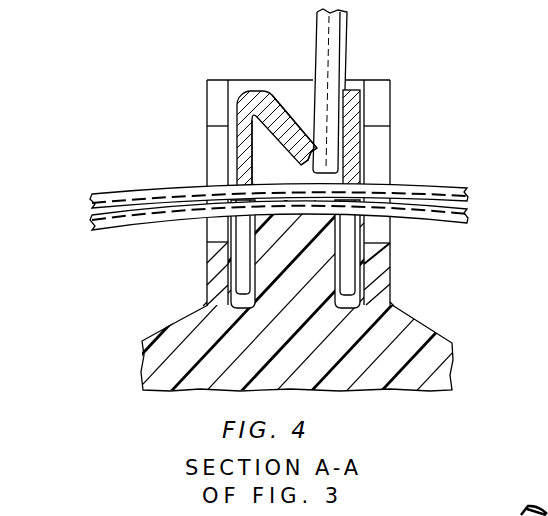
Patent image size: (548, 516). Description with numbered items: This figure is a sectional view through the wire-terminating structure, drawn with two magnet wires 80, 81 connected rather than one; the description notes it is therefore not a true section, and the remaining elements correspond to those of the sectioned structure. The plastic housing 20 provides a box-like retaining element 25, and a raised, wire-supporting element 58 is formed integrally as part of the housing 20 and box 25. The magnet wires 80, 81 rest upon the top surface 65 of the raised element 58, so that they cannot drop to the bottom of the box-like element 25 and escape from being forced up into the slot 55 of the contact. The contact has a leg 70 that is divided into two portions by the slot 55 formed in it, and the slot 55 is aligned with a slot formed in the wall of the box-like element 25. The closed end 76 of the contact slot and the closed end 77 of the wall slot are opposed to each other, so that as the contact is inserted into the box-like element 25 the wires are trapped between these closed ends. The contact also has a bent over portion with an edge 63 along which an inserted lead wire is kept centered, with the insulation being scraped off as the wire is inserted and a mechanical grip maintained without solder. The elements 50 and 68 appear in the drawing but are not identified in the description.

The plastic housing 20 is at (383, 364).
The box-like retaining element 25 is at (402, 120).
The actuator rod 50 is at (327, 41).
The slot 55 is at (208, 133).
The raised element 58 is at (317, 268).
The edge of bent over portion 63 is at (316, 154).
The top surface 65 is at (300, 208).
The spring arm 68 is at (276, 108).
The leg of contact 70 is at (226, 113).
The closed end of contact slot 76 is at (242, 178).
The closed end of wall slot 77 is at (209, 245).
The magnet wire 80 is at (430, 193).
The magnet wire 81 is at (442, 221).